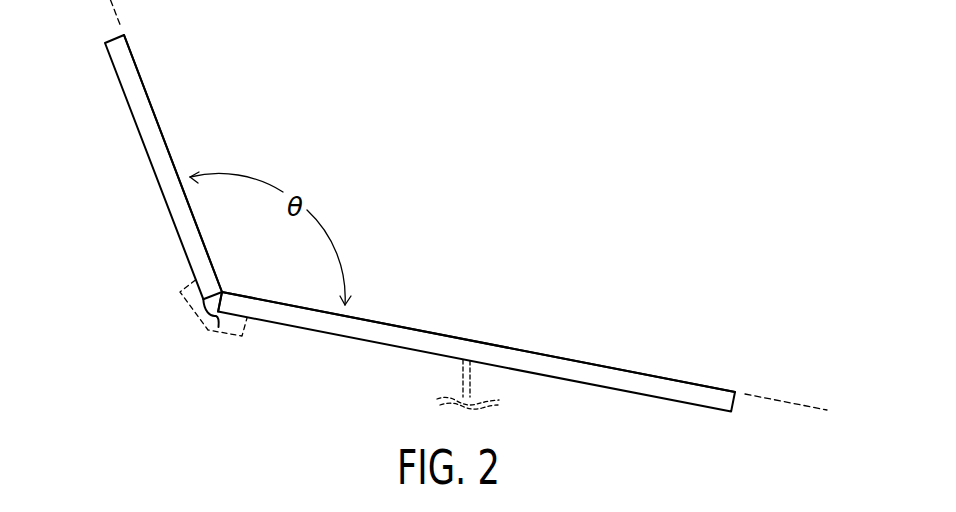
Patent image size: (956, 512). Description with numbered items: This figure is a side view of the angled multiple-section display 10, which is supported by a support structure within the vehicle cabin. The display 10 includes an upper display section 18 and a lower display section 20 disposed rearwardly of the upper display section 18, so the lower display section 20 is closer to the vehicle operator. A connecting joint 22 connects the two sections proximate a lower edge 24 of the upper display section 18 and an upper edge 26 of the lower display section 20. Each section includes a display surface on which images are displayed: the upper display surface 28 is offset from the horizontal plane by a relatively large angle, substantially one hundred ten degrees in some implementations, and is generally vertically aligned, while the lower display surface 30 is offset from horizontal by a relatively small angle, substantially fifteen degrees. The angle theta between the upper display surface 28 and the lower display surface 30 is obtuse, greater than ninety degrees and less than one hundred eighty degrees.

The multiple-section display 10 is at (452, 99).
The upper display section 18 is at (143, 145).
The lower display section 20 is at (368, 341).
The connecting joint 22 is at (215, 334).
The lower edge 24 is at (197, 322).
The upper edge 26 is at (219, 325).
The display surface 28 is at (147, 97).
The display surface 30 is at (547, 356).